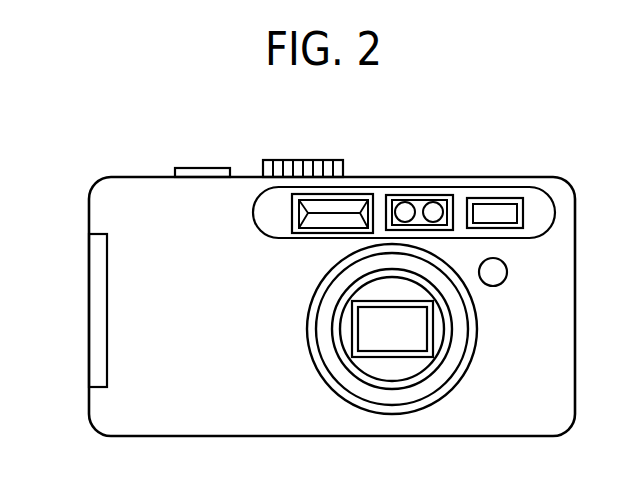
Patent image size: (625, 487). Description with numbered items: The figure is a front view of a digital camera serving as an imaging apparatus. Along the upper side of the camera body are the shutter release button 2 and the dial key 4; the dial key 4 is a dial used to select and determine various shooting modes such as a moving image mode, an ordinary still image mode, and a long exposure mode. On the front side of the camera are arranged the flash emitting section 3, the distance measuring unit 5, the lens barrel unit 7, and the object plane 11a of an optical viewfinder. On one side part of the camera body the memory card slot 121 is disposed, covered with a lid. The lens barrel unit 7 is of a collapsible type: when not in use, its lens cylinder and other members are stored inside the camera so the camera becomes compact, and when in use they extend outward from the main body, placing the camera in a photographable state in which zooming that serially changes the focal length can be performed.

The shutter release button 2 is at (207, 168).
The flash emitting section 3 is at (353, 205).
The dial key 4 is at (316, 160).
The distance measuring unit 5 is at (417, 208).
The lens barrel unit 7 is at (415, 368).
The object plane of optical viewfinder 11a is at (505, 220).
The memory card slot 121 is at (97, 311).